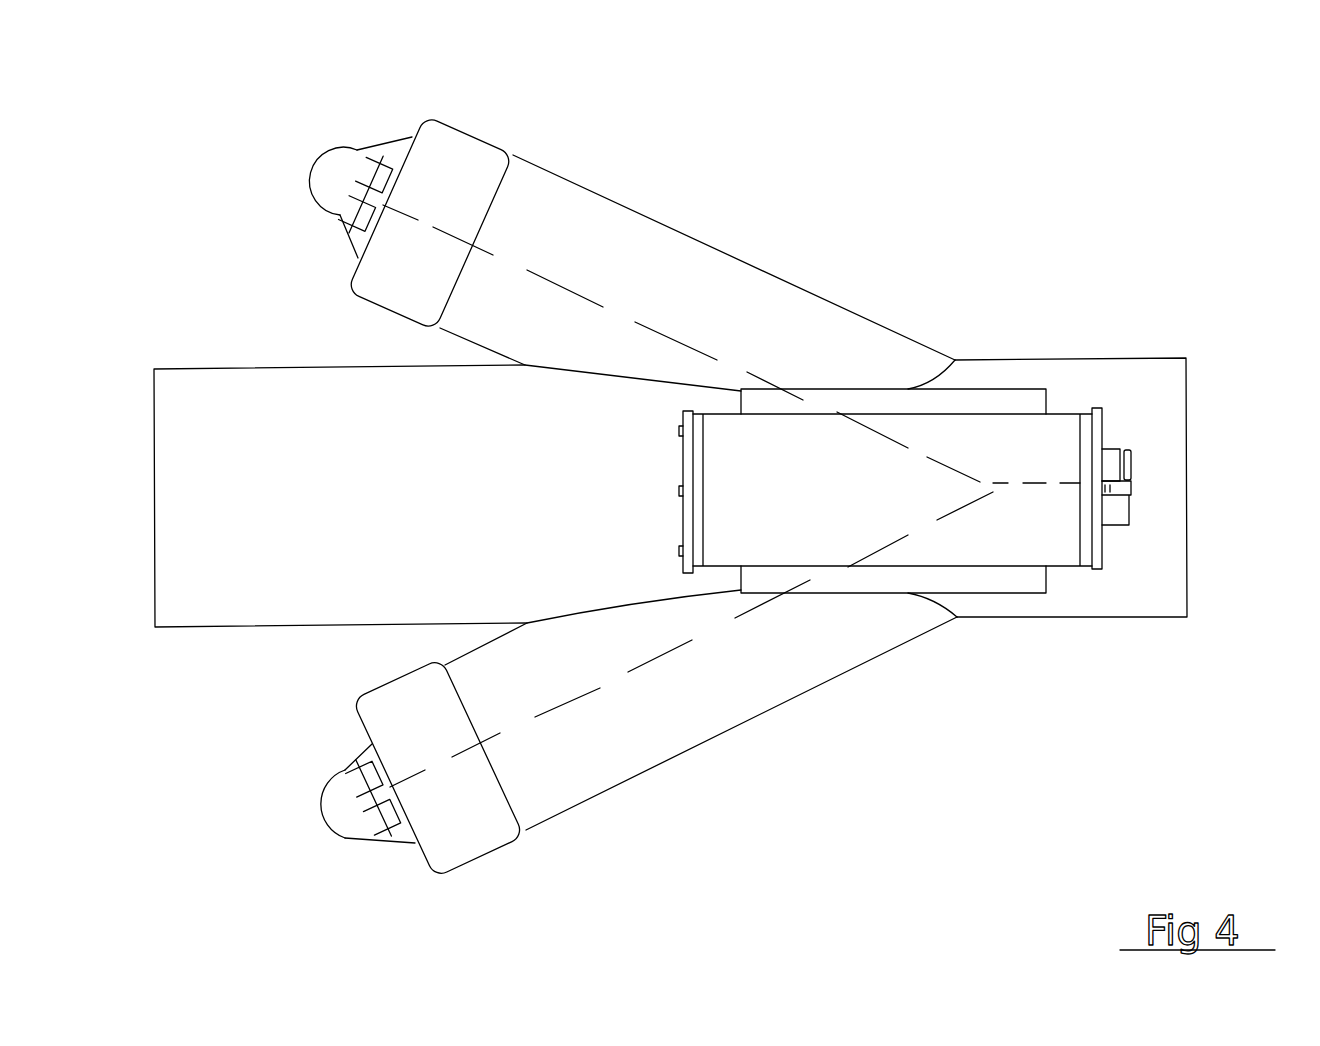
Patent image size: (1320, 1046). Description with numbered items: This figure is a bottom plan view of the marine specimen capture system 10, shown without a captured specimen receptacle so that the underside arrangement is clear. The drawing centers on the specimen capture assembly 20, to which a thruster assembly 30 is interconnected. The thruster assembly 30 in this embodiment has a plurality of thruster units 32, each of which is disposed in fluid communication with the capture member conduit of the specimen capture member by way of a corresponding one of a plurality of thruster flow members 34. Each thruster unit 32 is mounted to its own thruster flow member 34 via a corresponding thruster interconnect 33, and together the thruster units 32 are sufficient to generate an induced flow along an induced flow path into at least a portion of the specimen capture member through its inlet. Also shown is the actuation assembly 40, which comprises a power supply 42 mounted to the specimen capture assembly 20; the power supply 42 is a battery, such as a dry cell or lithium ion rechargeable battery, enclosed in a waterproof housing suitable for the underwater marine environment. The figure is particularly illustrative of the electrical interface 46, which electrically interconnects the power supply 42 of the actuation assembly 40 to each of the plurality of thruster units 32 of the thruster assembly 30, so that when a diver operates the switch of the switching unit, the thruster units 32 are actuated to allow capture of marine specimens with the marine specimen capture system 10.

The marine specimen capture system 10 is at (1152, 250).
The specimen capture assembly 20 is at (1143, 647).
The thruster assembly 30 is at (265, 195).
The thruster unit 32 is at (343, 148).
The thruster interconnect 33 is at (483, 139).
The thruster flow member 34 is at (750, 265).
The actuation assembly 40 is at (1090, 396).
The power supply 42 is at (1102, 550).
The electrical interface 46 is at (577, 282).